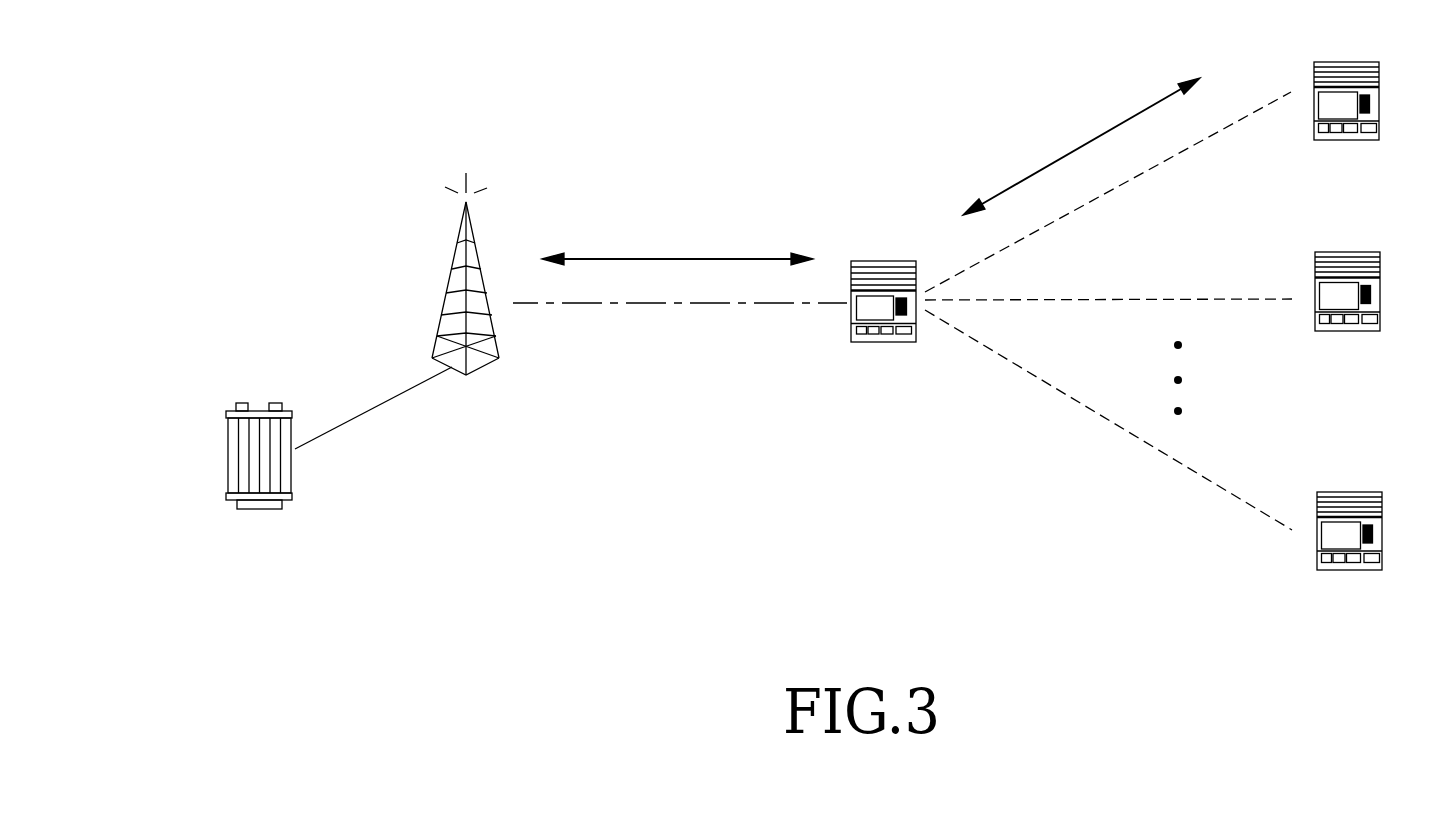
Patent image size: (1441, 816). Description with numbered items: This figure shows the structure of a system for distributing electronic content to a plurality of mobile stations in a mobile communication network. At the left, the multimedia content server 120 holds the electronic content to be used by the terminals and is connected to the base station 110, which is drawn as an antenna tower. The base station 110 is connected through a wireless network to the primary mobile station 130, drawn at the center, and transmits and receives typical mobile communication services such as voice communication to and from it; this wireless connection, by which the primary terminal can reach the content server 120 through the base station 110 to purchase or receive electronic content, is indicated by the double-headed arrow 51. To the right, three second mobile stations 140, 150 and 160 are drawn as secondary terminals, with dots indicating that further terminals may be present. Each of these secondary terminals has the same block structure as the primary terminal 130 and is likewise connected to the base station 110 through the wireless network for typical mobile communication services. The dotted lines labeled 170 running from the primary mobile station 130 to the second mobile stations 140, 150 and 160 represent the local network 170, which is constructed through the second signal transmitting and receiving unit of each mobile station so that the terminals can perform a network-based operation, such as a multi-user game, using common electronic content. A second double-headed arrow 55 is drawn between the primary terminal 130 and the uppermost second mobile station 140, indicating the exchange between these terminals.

The base station 110 is at (452, 264).
The content server 120 is at (262, 408).
The primary mobile station 130 is at (897, 261).
The second mobile station 140 is at (1362, 62).
The second mobile station 150 is at (1360, 252).
The second mobile station 160 is at (1362, 492).
The local network 170 is at (1212, 135).
The connection to the content server through the base station 51 is at (680, 259).
The link between first MS and second MS 55 is at (1082, 142).